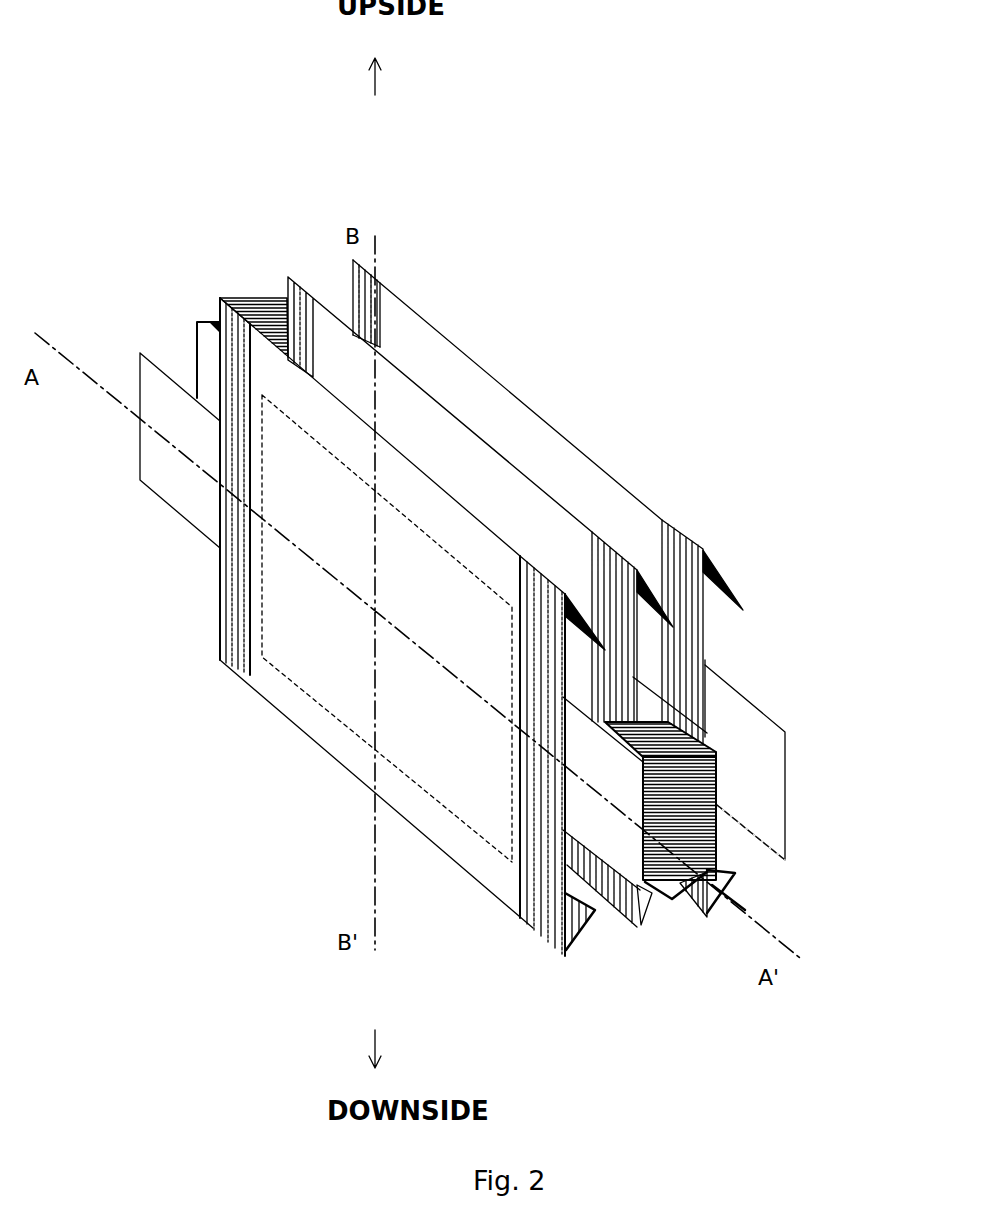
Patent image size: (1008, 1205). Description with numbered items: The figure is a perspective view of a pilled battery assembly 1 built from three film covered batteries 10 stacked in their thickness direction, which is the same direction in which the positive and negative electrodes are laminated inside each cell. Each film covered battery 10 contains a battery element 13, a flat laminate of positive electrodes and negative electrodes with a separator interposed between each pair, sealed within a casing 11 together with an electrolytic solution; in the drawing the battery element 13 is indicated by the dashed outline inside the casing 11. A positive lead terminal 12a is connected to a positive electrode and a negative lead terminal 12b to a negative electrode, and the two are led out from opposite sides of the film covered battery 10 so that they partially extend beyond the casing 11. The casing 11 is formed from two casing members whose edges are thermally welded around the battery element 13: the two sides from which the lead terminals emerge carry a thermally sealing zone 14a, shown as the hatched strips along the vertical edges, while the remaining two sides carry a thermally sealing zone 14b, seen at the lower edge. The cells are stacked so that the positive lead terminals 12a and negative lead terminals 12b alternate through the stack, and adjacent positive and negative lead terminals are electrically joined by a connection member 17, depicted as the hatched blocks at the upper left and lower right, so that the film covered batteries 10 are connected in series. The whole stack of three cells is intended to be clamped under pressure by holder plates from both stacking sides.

The pilled battery assembly 1 is at (185, 113).
The film covered battery 10 is at (488, 356).
The casing 11 is at (590, 467).
The positive lead terminal 12a is at (175, 492).
The negative lead terminal 12b is at (212, 354).
The battery element 13 is at (332, 678).
The thermally sealing zone 14a is at (240, 633).
The thermally sealing zone 14b is at (578, 940).
The connection member 17 is at (257, 298).